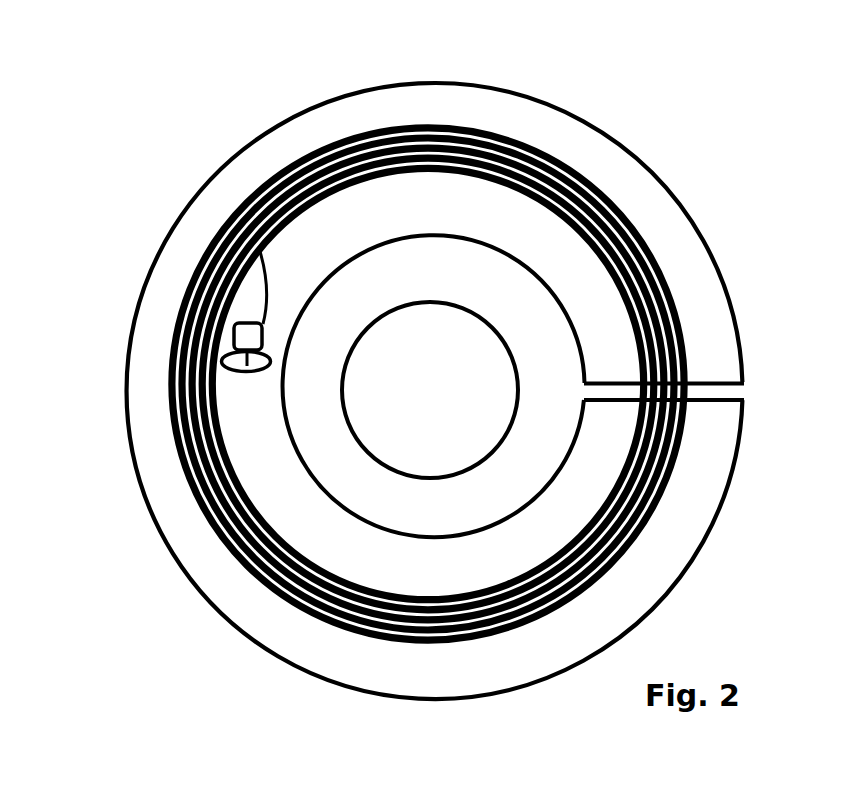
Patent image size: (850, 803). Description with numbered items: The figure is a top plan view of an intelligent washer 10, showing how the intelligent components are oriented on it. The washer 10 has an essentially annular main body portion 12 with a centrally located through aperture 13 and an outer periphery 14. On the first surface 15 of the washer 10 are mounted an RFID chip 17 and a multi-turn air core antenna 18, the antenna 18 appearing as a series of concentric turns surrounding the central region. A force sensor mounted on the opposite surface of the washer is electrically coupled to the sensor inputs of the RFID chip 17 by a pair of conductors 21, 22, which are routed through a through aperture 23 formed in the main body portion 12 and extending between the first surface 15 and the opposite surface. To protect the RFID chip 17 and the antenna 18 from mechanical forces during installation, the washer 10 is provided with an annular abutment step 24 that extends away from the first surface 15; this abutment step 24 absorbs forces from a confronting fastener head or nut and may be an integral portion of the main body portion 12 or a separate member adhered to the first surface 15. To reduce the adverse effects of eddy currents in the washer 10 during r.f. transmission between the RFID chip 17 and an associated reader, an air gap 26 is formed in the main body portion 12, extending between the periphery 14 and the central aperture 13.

The washer 10 is at (606, 114).
The main body portion 12 is at (688, 250).
The through aperture 13 is at (482, 313).
The outer periphery 14 is at (714, 543).
The first surface 15 is at (217, 196).
The RFID chip 17 is at (183, 317).
The multi-turn air core antenna 18 is at (282, 602).
The conductor 21 is at (236, 335).
The conductor 22 is at (223, 361).
The through aperture 23 is at (252, 375).
The annular abutment step 24 is at (423, 270).
The air gap 26 is at (745, 392).